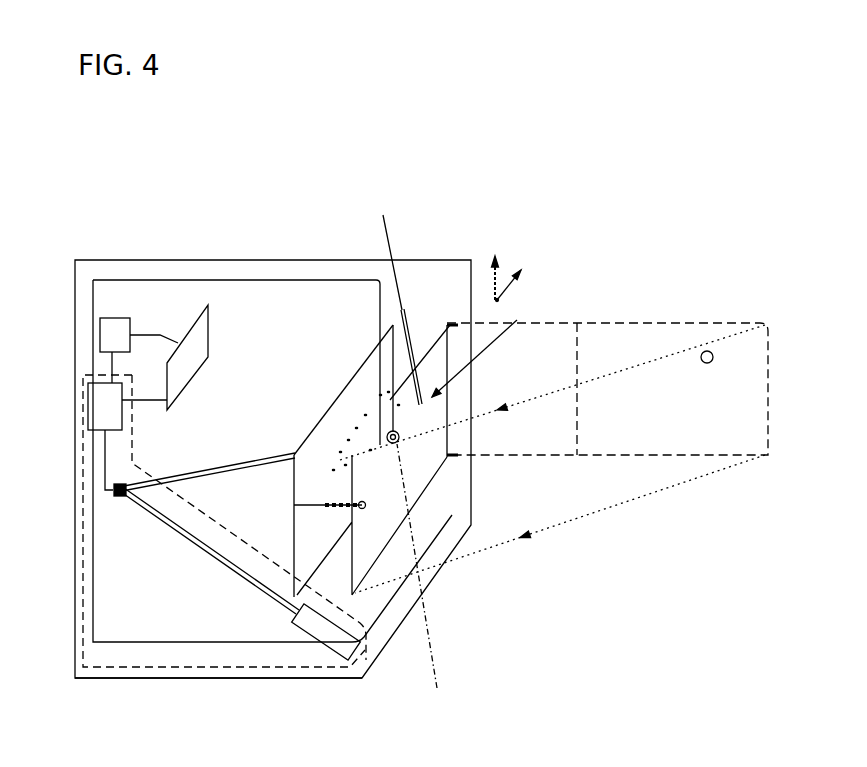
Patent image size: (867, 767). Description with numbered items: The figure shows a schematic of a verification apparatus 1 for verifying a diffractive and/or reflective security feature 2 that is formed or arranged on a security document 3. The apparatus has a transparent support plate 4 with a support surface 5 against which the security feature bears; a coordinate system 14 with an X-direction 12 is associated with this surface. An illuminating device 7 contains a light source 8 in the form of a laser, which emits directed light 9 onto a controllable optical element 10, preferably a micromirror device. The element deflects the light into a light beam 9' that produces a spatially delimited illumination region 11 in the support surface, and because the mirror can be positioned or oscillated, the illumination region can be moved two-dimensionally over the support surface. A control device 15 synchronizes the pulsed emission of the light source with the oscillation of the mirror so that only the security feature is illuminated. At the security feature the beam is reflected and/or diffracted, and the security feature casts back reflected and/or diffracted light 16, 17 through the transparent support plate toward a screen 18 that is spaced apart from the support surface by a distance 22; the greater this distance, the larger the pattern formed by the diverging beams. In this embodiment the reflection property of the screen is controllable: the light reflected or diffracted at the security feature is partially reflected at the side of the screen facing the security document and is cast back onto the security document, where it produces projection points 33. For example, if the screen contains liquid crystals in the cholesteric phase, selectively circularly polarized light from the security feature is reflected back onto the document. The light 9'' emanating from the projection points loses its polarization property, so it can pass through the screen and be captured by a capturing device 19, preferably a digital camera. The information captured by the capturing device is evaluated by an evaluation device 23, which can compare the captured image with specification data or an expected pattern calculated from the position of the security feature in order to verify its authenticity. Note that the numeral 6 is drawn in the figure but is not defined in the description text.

The verification apparatus 1 is at (471, 259).
The security feature 2 is at (709, 350).
The security document 3 is at (750, 323).
The support plate 4 is at (430, 320).
The support surface 5 is at (481, 348).
The light rays 6 is at (550, 323).
The illuminating device 7 is at (82, 676).
The light source 8 is at (363, 649).
The directed light 9 is at (210, 607).
The light beam 9' is at (168, 462).
The light emanating from the projection points 9'' is at (238, 444).
The controllable optical element 10 is at (113, 491).
The illumination region 11 is at (388, 400).
The X-direction 12 is at (501, 297).
The coordinate system 14 is at (512, 265).
The control device 15 is at (88, 398).
The reflected and/or diffracted light 16 is at (372, 418).
The reflected and/or diffracted light 17 is at (391, 446).
The screen 18 is at (363, 363).
The capturing device 19 is at (209, 331).
The distance 22 is at (321, 507).
The evaluation device 23 is at (101, 318).
The projection points 33 is at (417, 457).